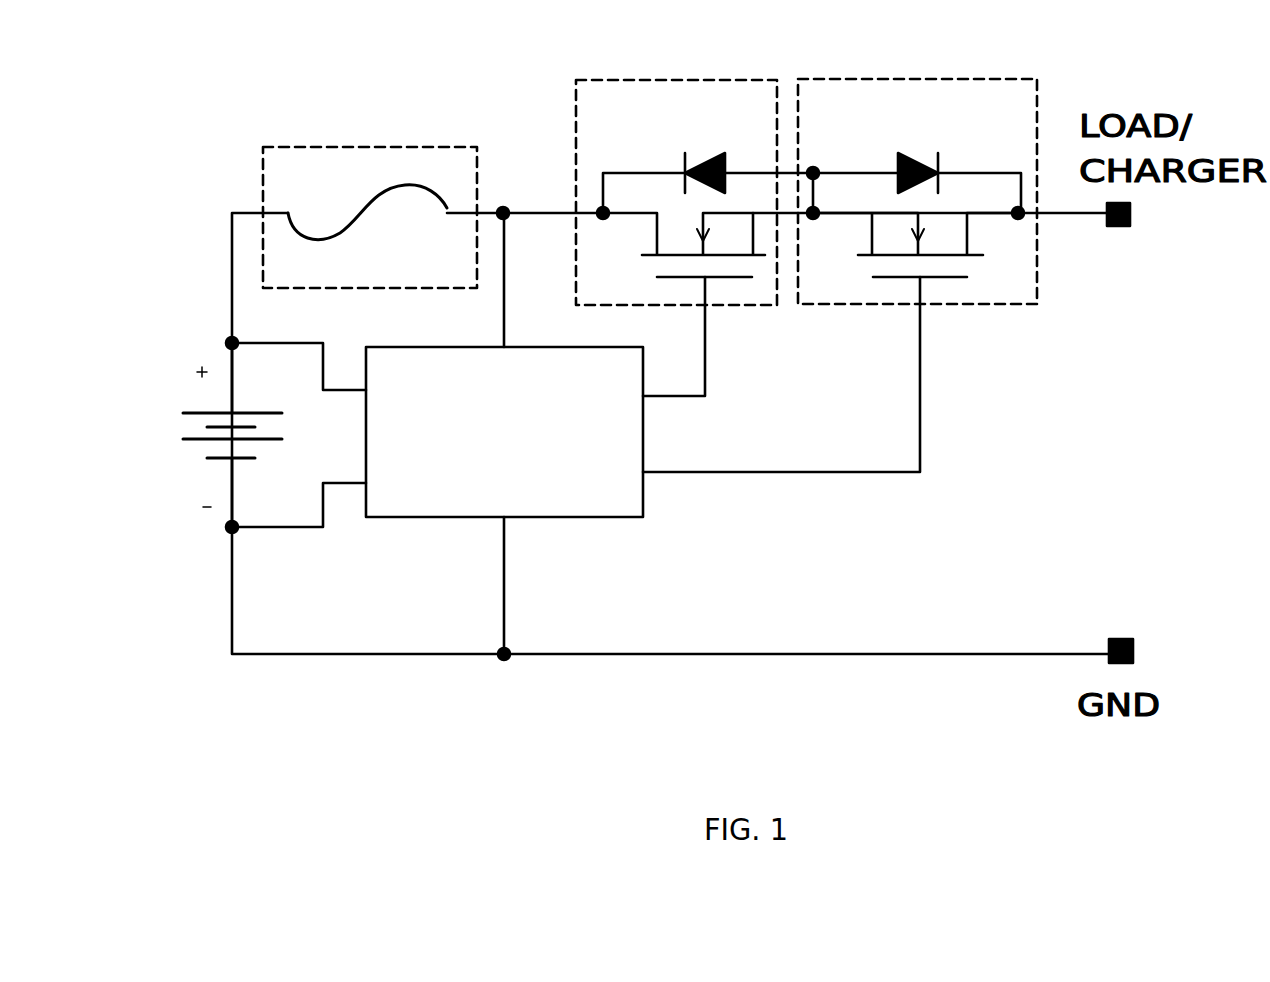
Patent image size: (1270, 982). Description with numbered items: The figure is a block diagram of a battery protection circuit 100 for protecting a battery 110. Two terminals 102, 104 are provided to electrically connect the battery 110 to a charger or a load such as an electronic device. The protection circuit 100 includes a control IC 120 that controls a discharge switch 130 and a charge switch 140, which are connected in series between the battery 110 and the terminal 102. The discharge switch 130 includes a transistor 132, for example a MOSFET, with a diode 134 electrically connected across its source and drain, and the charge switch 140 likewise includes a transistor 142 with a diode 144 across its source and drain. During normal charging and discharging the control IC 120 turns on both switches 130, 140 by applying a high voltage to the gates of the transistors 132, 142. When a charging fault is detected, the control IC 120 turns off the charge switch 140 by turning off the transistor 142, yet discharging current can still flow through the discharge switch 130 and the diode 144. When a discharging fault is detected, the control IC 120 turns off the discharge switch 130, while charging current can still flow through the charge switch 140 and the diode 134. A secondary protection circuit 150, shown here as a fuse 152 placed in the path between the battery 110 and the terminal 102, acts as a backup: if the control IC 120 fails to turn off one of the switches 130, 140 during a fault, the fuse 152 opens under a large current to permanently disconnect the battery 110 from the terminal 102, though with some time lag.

The battery protection circuit 100 is at (285, 101).
The terminal 102 is at (1112, 226).
The terminal 104 is at (1110, 640).
The battery 110 is at (185, 413).
The control IC 120 is at (517, 444).
The discharge switch 130 is at (602, 79).
The transistor 132 is at (720, 278).
The diode 134 is at (710, 160).
The charge switch 140 is at (826, 79).
The transistor 142 is at (940, 278).
The diode 144 is at (902, 156).
The secondary protection circuit 150 is at (400, 147).
The fuse 152 is at (340, 235).